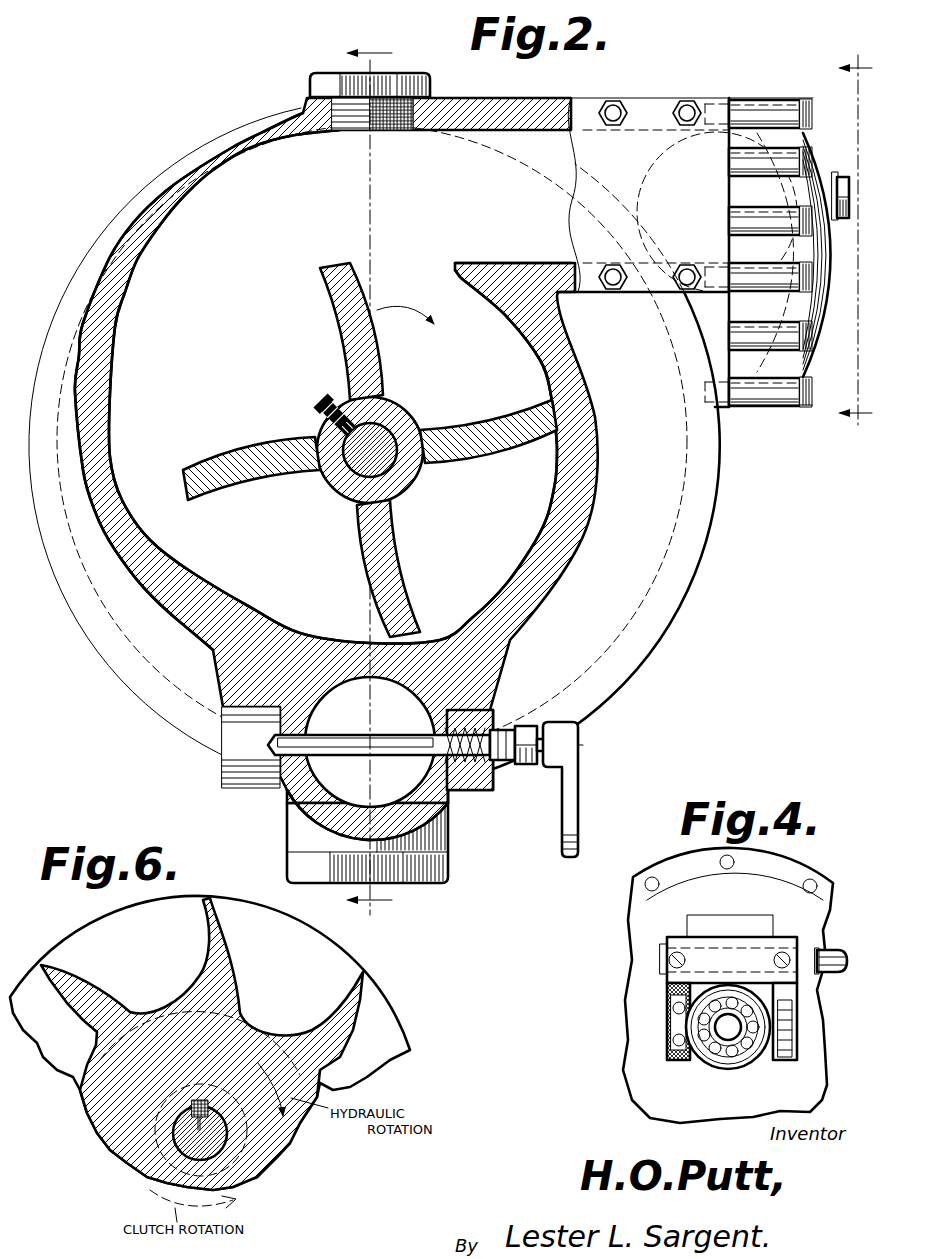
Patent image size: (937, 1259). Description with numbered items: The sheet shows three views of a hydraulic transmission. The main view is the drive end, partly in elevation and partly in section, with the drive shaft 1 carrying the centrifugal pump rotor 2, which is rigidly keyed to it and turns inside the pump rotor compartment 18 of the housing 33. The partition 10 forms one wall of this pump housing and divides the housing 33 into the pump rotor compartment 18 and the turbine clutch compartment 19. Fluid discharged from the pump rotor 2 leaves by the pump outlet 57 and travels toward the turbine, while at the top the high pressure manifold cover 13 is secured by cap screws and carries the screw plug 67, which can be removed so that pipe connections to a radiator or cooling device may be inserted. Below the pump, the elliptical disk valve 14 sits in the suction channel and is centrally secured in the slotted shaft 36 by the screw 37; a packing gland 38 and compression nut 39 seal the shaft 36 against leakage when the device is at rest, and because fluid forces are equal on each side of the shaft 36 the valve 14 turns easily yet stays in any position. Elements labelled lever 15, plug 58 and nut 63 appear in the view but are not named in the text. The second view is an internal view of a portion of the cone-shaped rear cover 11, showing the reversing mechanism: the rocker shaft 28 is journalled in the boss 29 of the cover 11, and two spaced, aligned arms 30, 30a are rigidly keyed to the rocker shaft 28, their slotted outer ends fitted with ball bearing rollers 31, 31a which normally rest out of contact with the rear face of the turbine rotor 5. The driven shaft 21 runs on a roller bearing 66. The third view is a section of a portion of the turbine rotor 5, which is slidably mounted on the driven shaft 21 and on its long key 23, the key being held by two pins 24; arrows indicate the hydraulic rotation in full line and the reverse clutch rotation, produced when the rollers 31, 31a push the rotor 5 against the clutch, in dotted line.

In FIG. 2, the drive shaft 1 is at (318, 512).
In FIG. 2, the centrifugal pump rotor 2 is at (332, 293).
In FIG. 6, the turbine rotor 5 is at (346, 1002).
In FIG. 2, the partition 10 is at (463, 517).
In FIG. 2, the rear cover 11 is at (855, 243).
In FIG. 4, the rear cover 11 is at (781, 893).
In FIG. 2, the high pressure manifold cover 13 is at (818, 337).
In FIG. 2, the elliptical disk valve 14 is at (402, 756).
In FIG. 2, the lever 15 is at (570, 797).
In FIG. 2, the pump rotor compartment 18 is at (239, 386).
In FIG. 2, the turbine clutch compartment 19 is at (690, 504).
In FIG. 6, the driven shaft 21 is at (222, 1138).
In FIG. 4, the driven shaft 21 is at (725, 1033).
In FIG. 6, the long key 23 is at (214, 1088).
In FIG. 6, the pins 24 is at (193, 1103).
In FIG. 4, the rocker shaft 28 is at (833, 952).
In FIG. 4, the boss 29 is at (721, 940).
In FIG. 4, the arm 30 is at (666, 988).
In FIG. 4, the arm 30a is at (798, 989).
In FIG. 4, the ball bearing roller 31 is at (678, 1060).
In FIG. 4, the ball bearing roller 31a is at (785, 1058).
In FIG. 2, the housing 33 is at (183, 162).
In FIG. 2, the slotted shaft 36 is at (337, 738).
In FIG. 2, the screw 37 is at (377, 738).
In FIG. 2, the packing gland 38 is at (461, 766).
In FIG. 2, the compression nut 39 is at (528, 777).
In FIG. 2, the pump outlet 57 is at (485, 264).
In FIG. 2, the bottom plug 58 is at (427, 884).
In FIG. 2, the top plug nut 63 is at (418, 76).
In FIG. 4, the roller bearing 66 is at (745, 1062).
In FIG. 2, the screw plug 67 is at (843, 176).